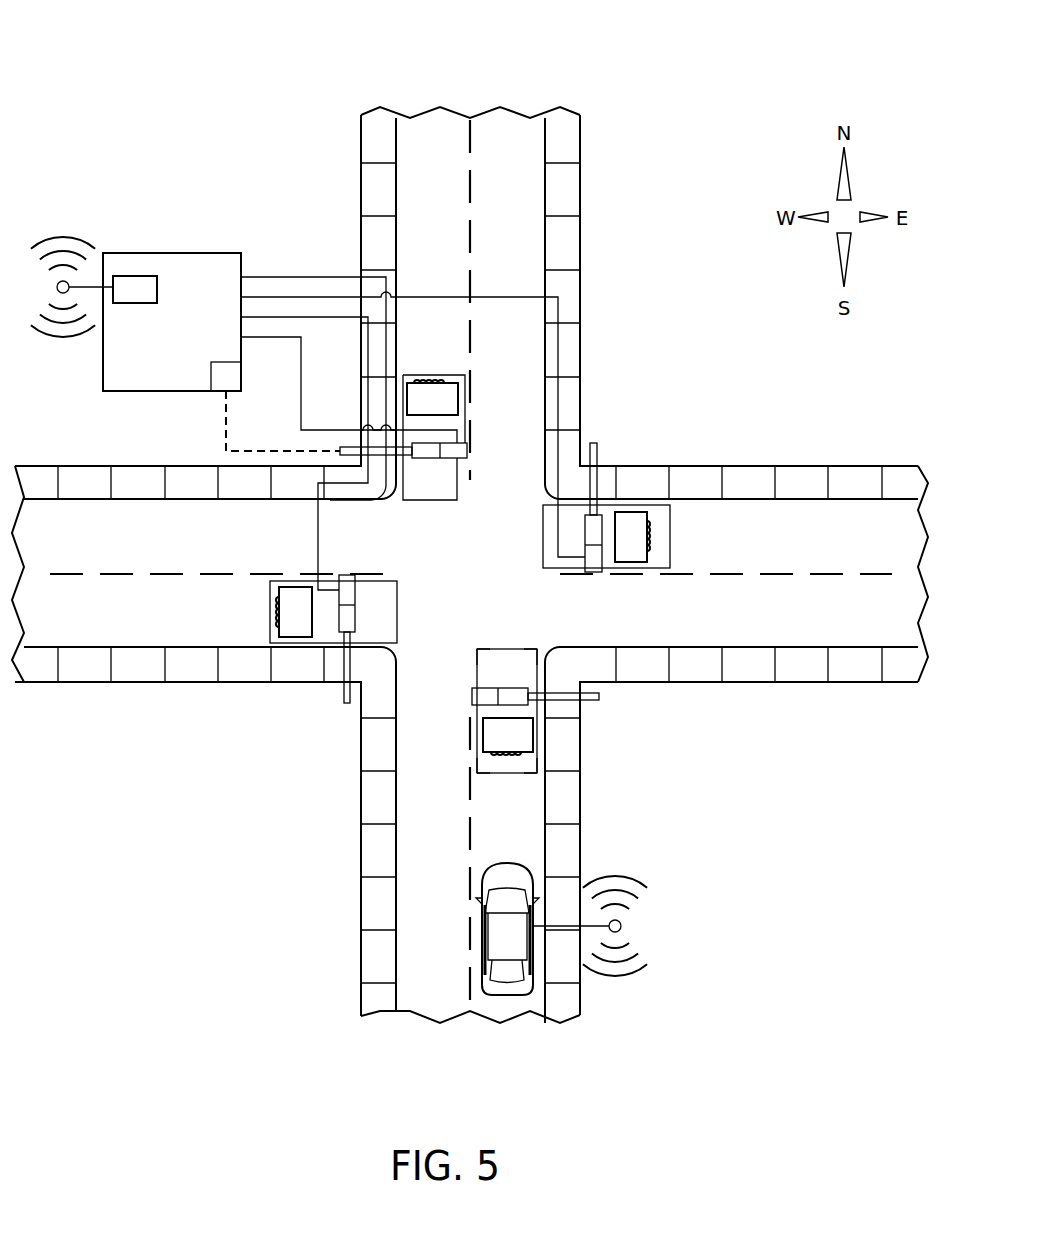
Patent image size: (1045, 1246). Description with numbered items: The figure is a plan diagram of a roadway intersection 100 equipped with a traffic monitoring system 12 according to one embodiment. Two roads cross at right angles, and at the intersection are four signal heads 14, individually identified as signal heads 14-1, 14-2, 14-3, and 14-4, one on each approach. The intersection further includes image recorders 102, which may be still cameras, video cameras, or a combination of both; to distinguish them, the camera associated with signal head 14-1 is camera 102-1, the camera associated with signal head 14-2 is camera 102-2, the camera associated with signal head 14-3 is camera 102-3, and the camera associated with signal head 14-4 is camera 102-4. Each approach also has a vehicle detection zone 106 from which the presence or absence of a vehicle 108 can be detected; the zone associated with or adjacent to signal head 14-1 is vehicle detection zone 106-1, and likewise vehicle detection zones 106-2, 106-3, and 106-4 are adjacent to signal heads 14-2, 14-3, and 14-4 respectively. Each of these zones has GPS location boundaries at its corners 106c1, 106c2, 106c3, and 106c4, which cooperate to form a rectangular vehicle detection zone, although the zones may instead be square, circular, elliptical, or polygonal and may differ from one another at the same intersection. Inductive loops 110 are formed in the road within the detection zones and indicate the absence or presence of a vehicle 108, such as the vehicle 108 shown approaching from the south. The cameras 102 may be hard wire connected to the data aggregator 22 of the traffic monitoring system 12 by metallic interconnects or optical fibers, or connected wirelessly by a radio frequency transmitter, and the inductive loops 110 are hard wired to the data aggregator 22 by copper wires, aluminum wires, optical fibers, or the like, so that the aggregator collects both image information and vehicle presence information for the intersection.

The roadway intersection 100 is at (70, 105).
The traffic monitoring system 12 is at (168, 253).
The data aggregator 22 is at (128, 276).
The signal head 14 is at (510, 559).
The signal head 14-1 is at (430, 460).
The signal head 14-2 is at (540, 705).
The signal head 14-3 is at (599, 505).
The signal head 14-4 is at (358, 618).
The image recorder 102 is at (501, 575).
The camera 102-1 is at (468, 452).
The camera 102-2 is at (474, 688).
The camera 102-3 is at (590, 573).
The camera 102-4 is at (388, 562).
The vehicle detection zone 106 is at (467, 555).
The vehicle detection zone 106-1 is at (437, 355).
The vehicle detection zone 106-2 is at (511, 729).
The vehicle detection zone 106-3 is at (673, 522).
The vehicle detection zone 106-4 is at (271, 612).
The corner 106c1 is at (477, 651).
The corner 106c2 is at (540, 652).
The corner 106c3 is at (537, 773).
The corner 106c4 is at (431, 782).
The inductive loop 110 is at (458, 384).
The vehicle 108 is at (482, 925).